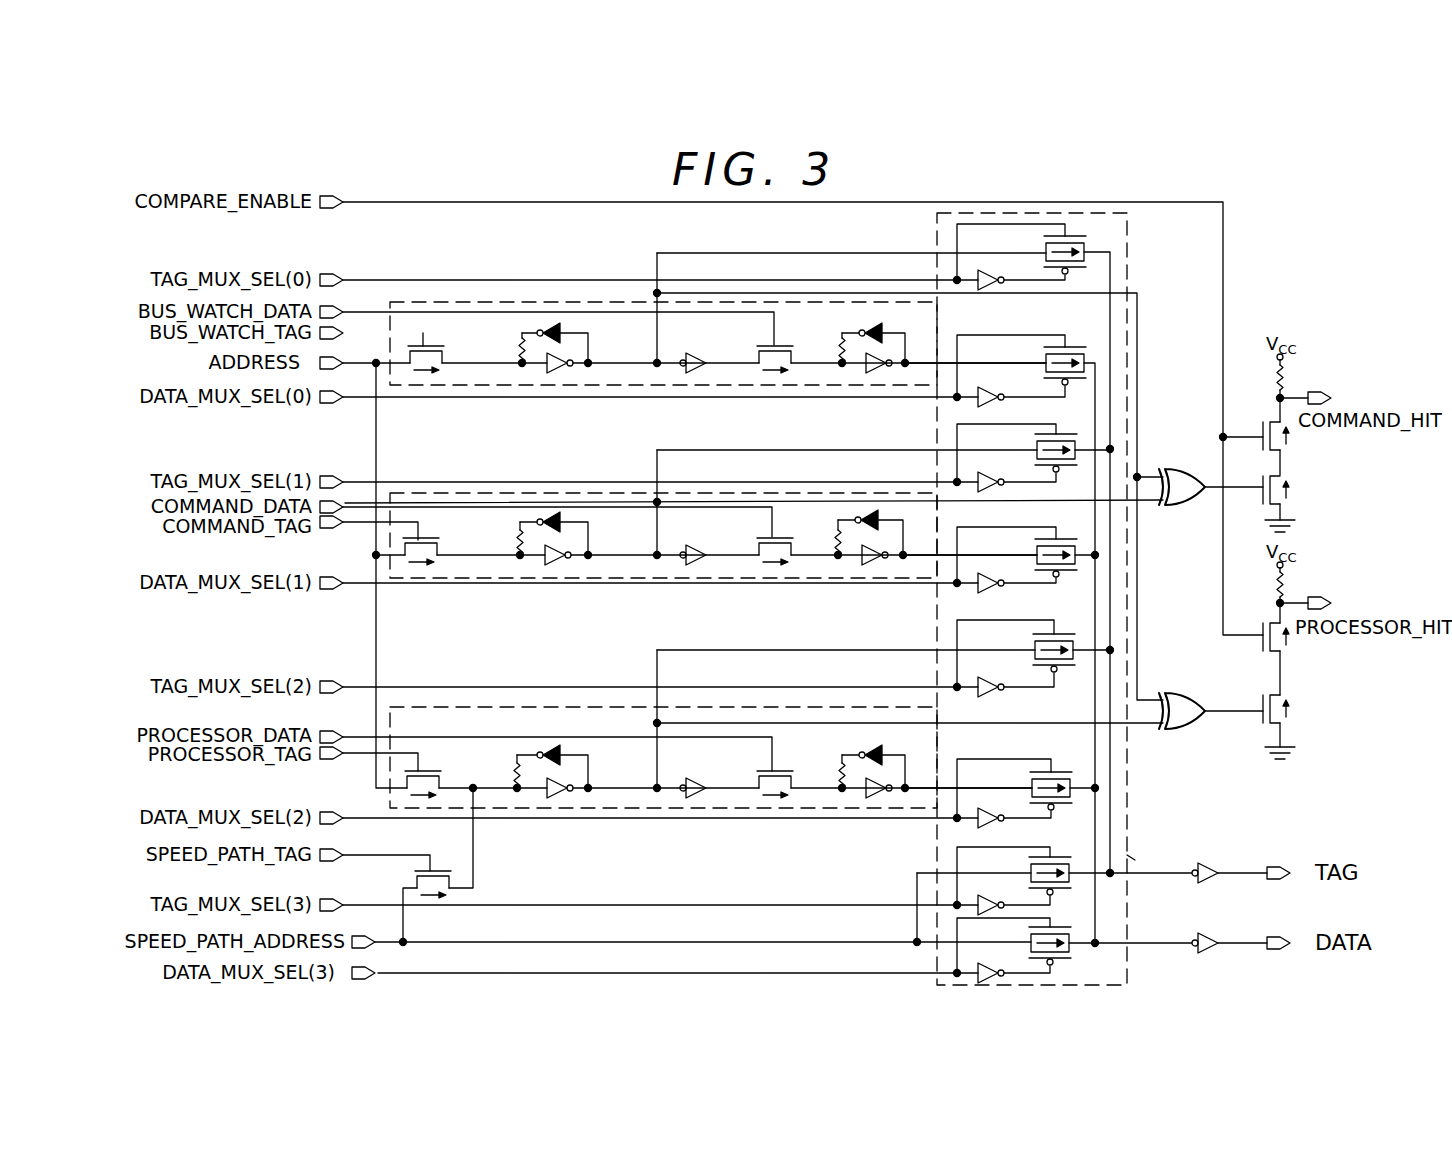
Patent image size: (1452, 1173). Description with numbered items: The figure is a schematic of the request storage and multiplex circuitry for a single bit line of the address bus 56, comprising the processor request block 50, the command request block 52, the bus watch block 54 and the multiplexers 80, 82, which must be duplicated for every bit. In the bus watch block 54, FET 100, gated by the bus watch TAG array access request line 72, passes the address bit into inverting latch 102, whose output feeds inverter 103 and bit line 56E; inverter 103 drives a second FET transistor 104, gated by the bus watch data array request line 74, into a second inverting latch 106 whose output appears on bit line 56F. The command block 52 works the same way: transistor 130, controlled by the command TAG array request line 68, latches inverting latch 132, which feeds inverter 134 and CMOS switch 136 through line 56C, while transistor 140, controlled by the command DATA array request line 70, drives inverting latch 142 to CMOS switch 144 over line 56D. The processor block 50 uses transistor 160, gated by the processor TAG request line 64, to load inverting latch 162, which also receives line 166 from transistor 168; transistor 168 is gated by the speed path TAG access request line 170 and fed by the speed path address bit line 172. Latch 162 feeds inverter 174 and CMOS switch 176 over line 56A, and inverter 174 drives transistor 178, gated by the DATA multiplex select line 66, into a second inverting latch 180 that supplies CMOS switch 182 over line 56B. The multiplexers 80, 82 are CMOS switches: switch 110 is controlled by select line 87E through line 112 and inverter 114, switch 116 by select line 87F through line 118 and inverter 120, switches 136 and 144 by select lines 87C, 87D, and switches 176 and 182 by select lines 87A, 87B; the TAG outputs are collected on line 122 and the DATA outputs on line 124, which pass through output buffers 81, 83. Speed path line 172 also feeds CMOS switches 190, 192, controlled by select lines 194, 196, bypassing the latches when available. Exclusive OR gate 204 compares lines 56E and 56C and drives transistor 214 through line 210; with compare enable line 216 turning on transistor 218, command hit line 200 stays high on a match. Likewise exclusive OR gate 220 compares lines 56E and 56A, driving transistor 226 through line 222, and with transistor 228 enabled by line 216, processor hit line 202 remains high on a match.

The compare enable line 216 is at (1145, 202).
The DATA array multiplex select line 87E is at (370, 280).
The TAG array multiplex select line 87F is at (355, 405).
The multiplex select line 87C is at (370, 482).
The multiplex select line 87D is at (355, 590).
The TAG multiplex select line 87A is at (368, 687).
The DATA array multiplex select line 87B is at (365, 820).
The bus watch block 54 is at (528, 302).
The command request block 52 is at (530, 493).
The processor request block 50 is at (530, 707).
The address bus 56 is at (378, 340).
The bit line of bus 56E is at (778, 252).
The bit line of bus 56F is at (915, 388).
The bit line 56C is at (778, 450).
The bit line 56D is at (915, 580).
The bit line 56A is at (835, 650).
The bit line 56B is at (915, 808).
The bus watch data array request line 74 is at (343, 312).
The bus watch TAG array access request line 72 is at (425, 345).
The FET 100 is at (519, 345).
The inverting latch 102 is at (572, 366).
The inverter 103 is at (700, 365).
The second FET transistor 104 is at (778, 345).
The second inverting latch 106 is at (880, 333).
The CMOS switch 110 is at (1080, 245).
The line 112 is at (1028, 224).
The inverter 114 is at (990, 280).
The CMOS switch 116 is at (1072, 348).
The line 118 is at (1020, 335).
The inverter 120 is at (985, 397).
The line 122 is at (1112, 280).
The line 124 is at (1090, 388).
The command DATA array request line 70 is at (445, 508).
The command TAG array request line 68 is at (360, 525).
The FET transistor 130 is at (440, 560).
The inverting latch 132 is at (558, 570).
The inverter 134 is at (718, 572).
The transistor 140 is at (778, 545).
The inverting latch 142 is at (885, 522).
The CMOS switch 136 is at (1036, 446).
The CMOS switch 144 is at (1036, 551).
The DATA multiplex select line 66 is at (352, 737).
The processor TAG request line 64 is at (362, 755).
The transistor 160 is at (440, 785).
The inverting latch 162 is at (560, 752).
The inverter 174 is at (702, 790).
The transistor 178 is at (773, 774).
The second inverting latch 180 is at (882, 752).
The CMOS switch 176 is at (1076, 640).
The CMOS switch 182 is at (1060, 772).
The line 166 is at (478, 878).
The transistor 168 is at (452, 876).
The speed path TAG access request line 170 is at (345, 857).
The speed path address bit line 172 is at (520, 918).
The TAG multiplex select line 194 is at (680, 905).
The DATA array multiplex select line 196 is at (742, 974).
The CMOS switch 190 is at (1066, 858).
The CMOS switch 192 is at (1066, 940).
The multiplexer 80 is at (1135, 855).
The multiplexer 82 is at (1080, 599).
The tag output buffer 81 is at (1260, 836).
The data output buffer 83 is at (1263, 906).
The exclusive OR gate 204 is at (1172, 470).
The line 210 is at (1210, 498).
The exclusive OR gate 220 is at (1178, 697).
The line 222 is at (1243, 718).
The command hit line 200 is at (1308, 392).
The processor hit line 202 is at (1308, 597).
The transistor 218 is at (1292, 440).
The transistor 214 is at (1292, 492).
The transistor 228 is at (1292, 648).
The transistor 226 is at (1292, 722).